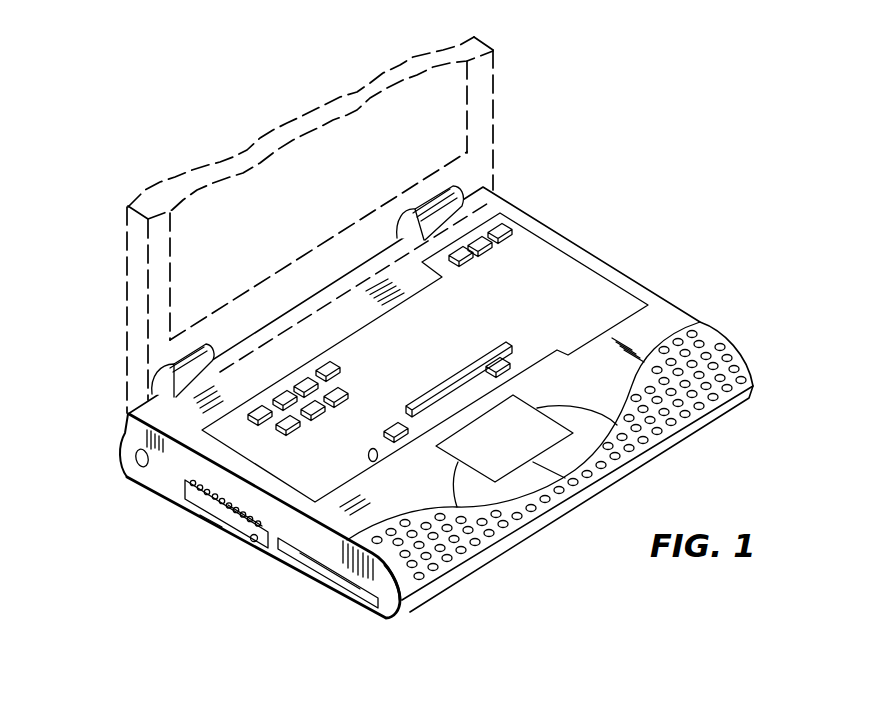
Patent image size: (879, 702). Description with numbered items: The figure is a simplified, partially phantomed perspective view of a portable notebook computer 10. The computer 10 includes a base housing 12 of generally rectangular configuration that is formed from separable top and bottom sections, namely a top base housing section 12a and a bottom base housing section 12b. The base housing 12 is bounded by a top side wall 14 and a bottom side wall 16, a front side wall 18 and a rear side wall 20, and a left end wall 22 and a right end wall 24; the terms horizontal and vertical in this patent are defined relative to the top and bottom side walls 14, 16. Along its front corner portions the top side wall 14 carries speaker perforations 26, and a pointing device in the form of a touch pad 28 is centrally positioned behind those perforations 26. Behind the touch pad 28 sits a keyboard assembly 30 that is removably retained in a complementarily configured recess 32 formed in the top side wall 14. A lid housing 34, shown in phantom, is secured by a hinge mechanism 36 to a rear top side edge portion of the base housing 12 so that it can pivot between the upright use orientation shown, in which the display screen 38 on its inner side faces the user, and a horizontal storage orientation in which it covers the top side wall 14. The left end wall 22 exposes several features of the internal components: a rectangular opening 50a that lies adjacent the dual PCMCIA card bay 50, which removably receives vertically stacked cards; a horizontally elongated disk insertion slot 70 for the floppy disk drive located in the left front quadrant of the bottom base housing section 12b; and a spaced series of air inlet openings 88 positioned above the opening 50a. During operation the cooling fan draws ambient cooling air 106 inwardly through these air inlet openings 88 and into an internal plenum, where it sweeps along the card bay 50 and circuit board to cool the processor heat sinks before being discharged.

The portable notebook computer 10 is at (604, 131).
The base housing 12 is at (654, 266).
The top base housing section 12a is at (176, 454).
The bottom base housing section 12b is at (388, 607).
The top side wall 14 is at (663, 322).
The bottom side wall 16 is at (295, 577).
The front side wall 18 is at (557, 522).
The rear side wall 20 is at (118, 444).
The left end wall 22 is at (140, 472).
The right end wall 24 is at (590, 252).
The speaker perforations 26 is at (450, 560).
The touch pad 28 is at (520, 447).
The keyboard assembly 30 is at (524, 263).
The recess 32 is at (374, 460).
The lid housing 34 is at (500, 88).
The hinge mechanism 36 is at (468, 174).
The display screen 38 is at (168, 274).
The dual PCMCIA card bay 50 is at (240, 535).
The rectangular opening 50a is at (253, 545).
The disk insertion slot 70 is at (343, 585).
The air inlet openings 88 is at (220, 502).
The ambient cooling air 106 is at (205, 508).